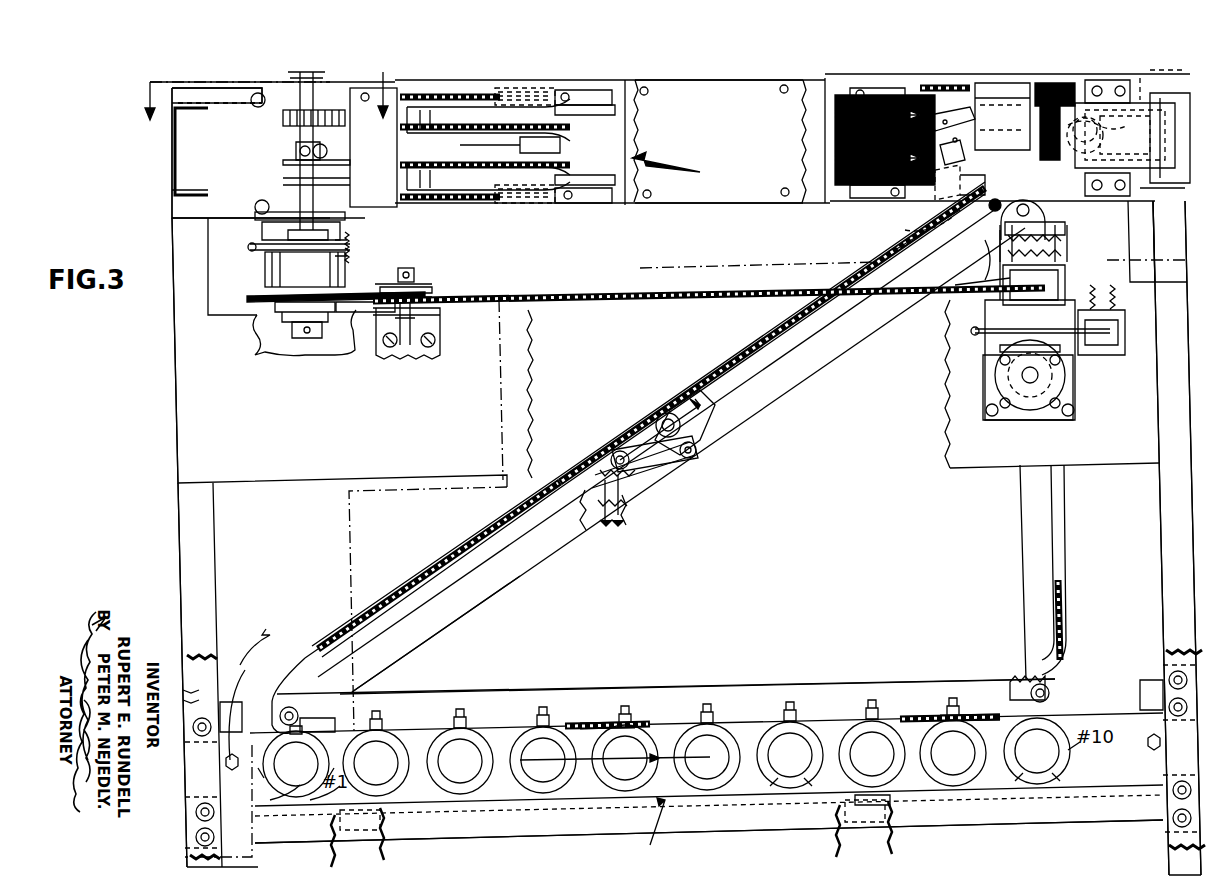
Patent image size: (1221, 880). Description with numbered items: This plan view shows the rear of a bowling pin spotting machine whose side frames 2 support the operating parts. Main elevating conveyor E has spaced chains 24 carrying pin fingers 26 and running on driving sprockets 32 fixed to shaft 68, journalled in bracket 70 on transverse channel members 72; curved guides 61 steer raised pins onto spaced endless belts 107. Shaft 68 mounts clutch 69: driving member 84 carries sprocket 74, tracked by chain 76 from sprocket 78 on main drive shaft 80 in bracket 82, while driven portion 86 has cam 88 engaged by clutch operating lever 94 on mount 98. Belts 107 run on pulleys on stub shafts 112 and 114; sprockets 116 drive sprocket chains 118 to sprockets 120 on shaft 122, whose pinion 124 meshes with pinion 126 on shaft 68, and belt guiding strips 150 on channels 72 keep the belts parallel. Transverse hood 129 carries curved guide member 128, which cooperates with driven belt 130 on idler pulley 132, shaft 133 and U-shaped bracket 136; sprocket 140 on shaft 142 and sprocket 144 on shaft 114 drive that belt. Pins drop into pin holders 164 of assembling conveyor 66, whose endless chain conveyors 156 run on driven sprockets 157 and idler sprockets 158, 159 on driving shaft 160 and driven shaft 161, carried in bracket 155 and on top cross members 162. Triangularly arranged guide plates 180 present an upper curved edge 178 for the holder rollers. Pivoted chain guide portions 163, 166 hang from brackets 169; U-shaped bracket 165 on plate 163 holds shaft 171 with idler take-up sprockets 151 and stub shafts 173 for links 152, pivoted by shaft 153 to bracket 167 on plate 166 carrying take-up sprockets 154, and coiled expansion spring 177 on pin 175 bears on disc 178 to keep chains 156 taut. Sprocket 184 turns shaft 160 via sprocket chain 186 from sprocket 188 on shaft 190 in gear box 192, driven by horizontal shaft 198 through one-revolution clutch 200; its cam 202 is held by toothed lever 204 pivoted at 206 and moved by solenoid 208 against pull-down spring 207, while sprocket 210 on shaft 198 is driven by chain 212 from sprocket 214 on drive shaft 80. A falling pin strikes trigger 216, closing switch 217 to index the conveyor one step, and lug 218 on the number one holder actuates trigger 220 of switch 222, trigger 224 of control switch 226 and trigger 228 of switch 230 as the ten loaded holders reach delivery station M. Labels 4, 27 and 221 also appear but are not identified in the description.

The frame 2 is at (172, 167).
The section line 4- 4 is at (266, 109).
The drive chain 24 is at (296, 150).
The push rod 26 is at (498, 145).
The cover plate 27 is at (205, 106).
The bearing 32 is at (296, 144).
The tube 61 is at (444, 120).
The conveyor belt 66 is at (410, 560).
The shaft support 68 is at (330, 188).
The drive unit 69 is at (358, 268).
The bolt 70 is at (251, 105).
The top plate 72 is at (188, 99).
The clutch hub 74 is at (270, 302).
The bracket plate 76 is at (368, 312).
The sprocket 78 is at (414, 282).
The pin 80 is at (405, 348).
The mounting block 82 is at (437, 320).
The drive shaft 84 is at (250, 278).
The bracket 86 is at (262, 232).
The clutch drum 88 is at (265, 266).
The clutch lever 94 is at (262, 246).
The base plate 98 is at (258, 220).
The side rail 107 is at (632, 130).
The guide block 112 is at (515, 206).
The link 114 is at (925, 228).
The slide plate 116 is at (556, 205).
The rack bar 118 is at (470, 205).
The drive column 120 is at (300, 192).
The spacer 122 is at (320, 170).
The side plate 124 is at (338, 112).
The gear 126 is at (283, 122).
The lever 128 is at (964, 136).
The cover panel 129 is at (392, 208).
The slide 130 is at (1015, 83).
The end block 132 is at (1170, 128).
The bracket 133 is at (1180, 175).
The solenoid housing 136 is at (1125, 108).
The armature 140 is at (1055, 83).
The bracket 142 is at (1100, 80).
The rack 144 is at (960, 83).
The mounting bracket 150 is at (596, 205).
The gear 151 is at (640, 478).
The link arm 152 is at (700, 462).
The roller 153 is at (675, 412).
The direction arrow 154 is at (645, 426).
The plate 155 is at (1065, 216).
The chain 156 is at (1062, 258).
The spring 157 is at (1000, 255).
The pad 158 is at (1015, 668).
The bracket 159 is at (318, 713).
The sprocket 160 is at (1030, 205).
The idler roller 161 is at (289, 707).
The conveyor rail 162 is at (780, 390).
The rail 163 is at (475, 524).
The carrier ring 164 is at (500, 815).
The link 165 is at (668, 466).
The upper rail 166 is at (760, 348).
The mounting plate 167 is at (700, 405).
The chain guide 169 is at (318, 652).
The roller 171 is at (610, 457).
The pulley 173 is at (697, 450).
The gear 175 is at (620, 508).
The gear 177 is at (598, 522).
The chain guide 178 is at (556, 482).
The chain section 180 is at (605, 722).
The gear 184 is at (1063, 232).
The shaft 186 is at (1062, 244).
The motor flange 188 is at (1010, 372).
The motor 190 is at (1035, 390).
The mounting screw 192 is at (1005, 415).
The spring 198 is at (960, 283).
The housing 200 is at (943, 328).
The screw 202 is at (1003, 360).
The bar 204 is at (1000, 348).
The motor bracket 206 is at (1073, 360).
The rod 207 is at (975, 333).
The switch 208 is at (1100, 355).
The gear box 210 is at (1062, 282).
The drive chain 212 is at (625, 302).
The bar 214 is at (418, 292).
The coil 216 is at (1102, 131).
The coil 217 is at (1102, 139).
The switch contact 218 is at (280, 800).
The stop 220 is at (958, 180).
The bottom rail 221 is at (1100, 820).
The slide block 222 is at (879, 140).
The switch 224 is at (835, 795).
The switch 226 is at (888, 800).
The contact 228 is at (325, 800).
The switch 230 is at (380, 800).
The direction E is at (666, 167).
The direction M is at (647, 830).